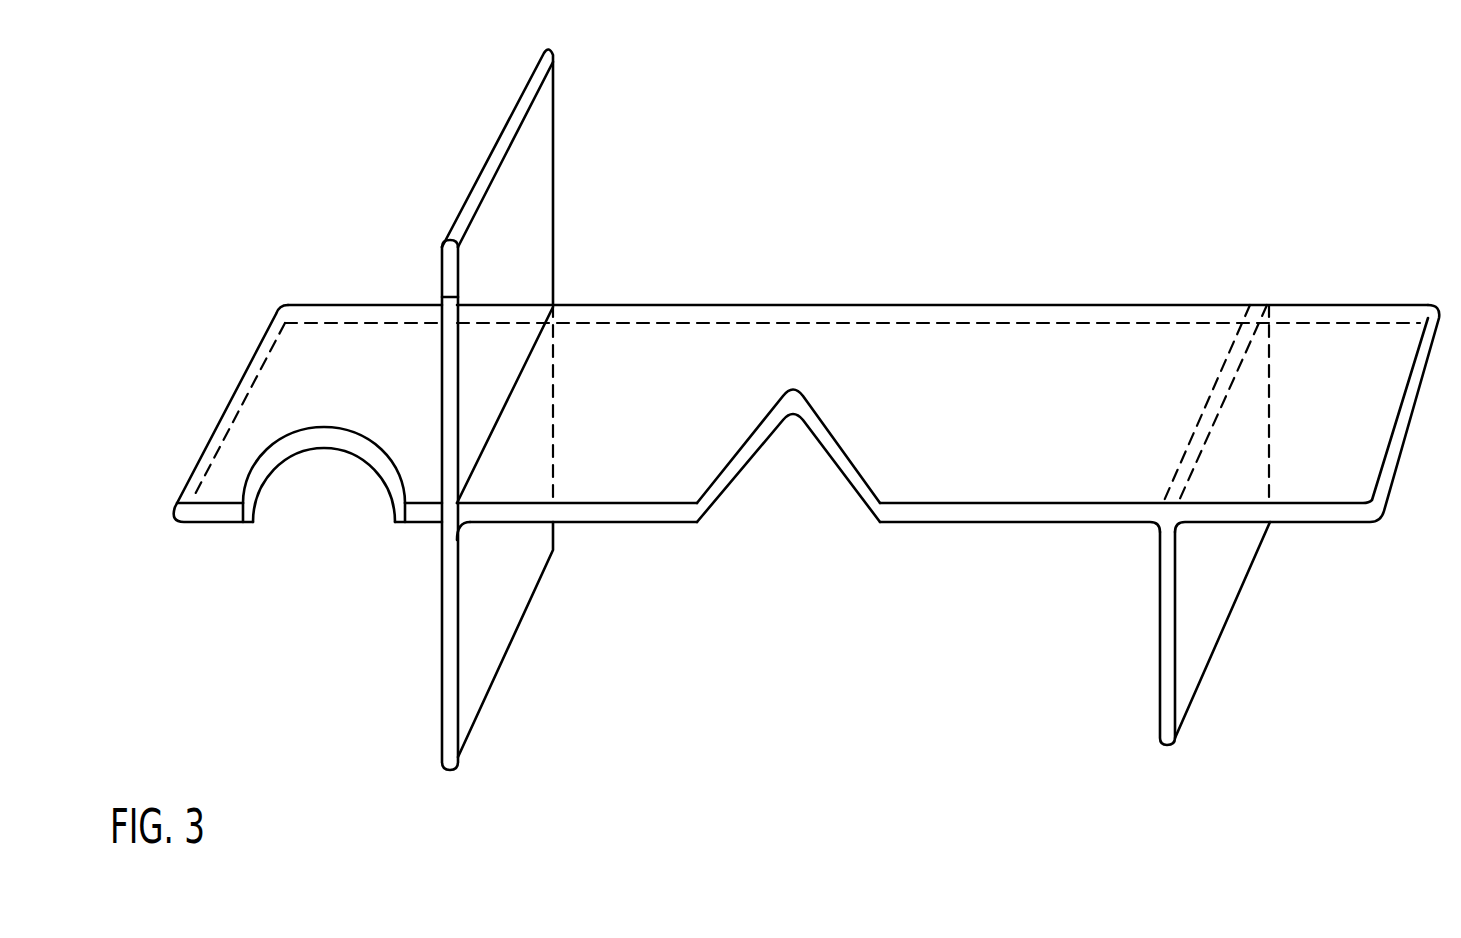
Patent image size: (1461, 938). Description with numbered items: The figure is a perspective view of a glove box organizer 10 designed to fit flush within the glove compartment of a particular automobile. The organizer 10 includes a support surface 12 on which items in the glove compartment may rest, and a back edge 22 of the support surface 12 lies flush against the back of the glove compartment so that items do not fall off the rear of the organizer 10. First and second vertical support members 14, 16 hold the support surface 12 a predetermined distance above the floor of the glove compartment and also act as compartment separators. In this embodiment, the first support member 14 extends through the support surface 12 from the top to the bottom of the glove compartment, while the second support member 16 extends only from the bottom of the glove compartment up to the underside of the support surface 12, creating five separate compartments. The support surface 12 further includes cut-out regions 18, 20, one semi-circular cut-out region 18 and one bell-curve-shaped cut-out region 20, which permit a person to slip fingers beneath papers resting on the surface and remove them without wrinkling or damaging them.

The glove box organizer 10 is at (784, 158).
The support surface 12 is at (1063, 362).
The first vertical support member 14 is at (540, 222).
The second vertical support member 16 is at (1160, 657).
The cut-out region 18 is at (332, 488).
The second cut-out region 20 is at (793, 468).
The back edge 22 is at (934, 305).